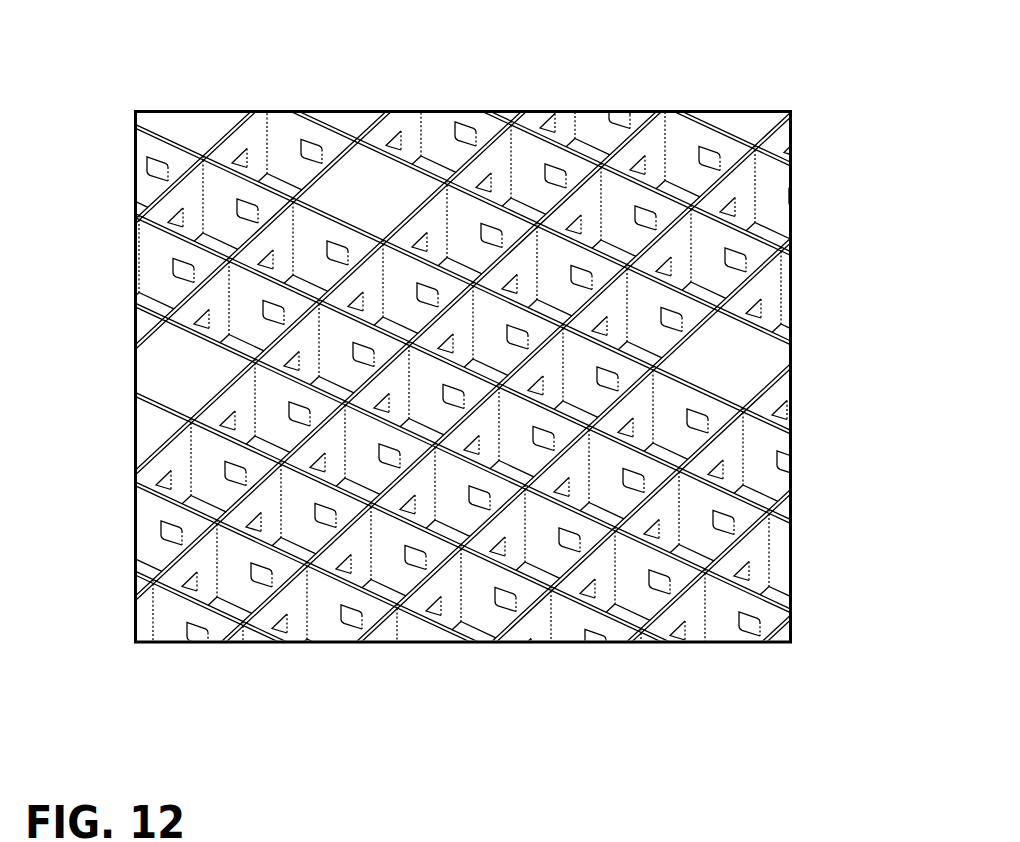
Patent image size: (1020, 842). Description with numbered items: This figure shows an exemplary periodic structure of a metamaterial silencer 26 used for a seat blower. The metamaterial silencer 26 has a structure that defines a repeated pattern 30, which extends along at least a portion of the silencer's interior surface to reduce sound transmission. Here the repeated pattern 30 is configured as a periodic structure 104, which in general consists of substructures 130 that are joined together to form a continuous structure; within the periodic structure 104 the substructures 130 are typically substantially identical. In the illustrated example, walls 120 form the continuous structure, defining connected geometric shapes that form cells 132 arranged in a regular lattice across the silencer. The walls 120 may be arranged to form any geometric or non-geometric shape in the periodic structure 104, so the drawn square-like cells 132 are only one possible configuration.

The metamaterial silencer 26 is at (636, 97).
The repeated pattern 30 is at (375, 178).
The periodic structure 104 is at (768, 353).
The wall 120 is at (713, 445).
The substructure 130 is at (158, 421).
The cell 132 is at (182, 395).